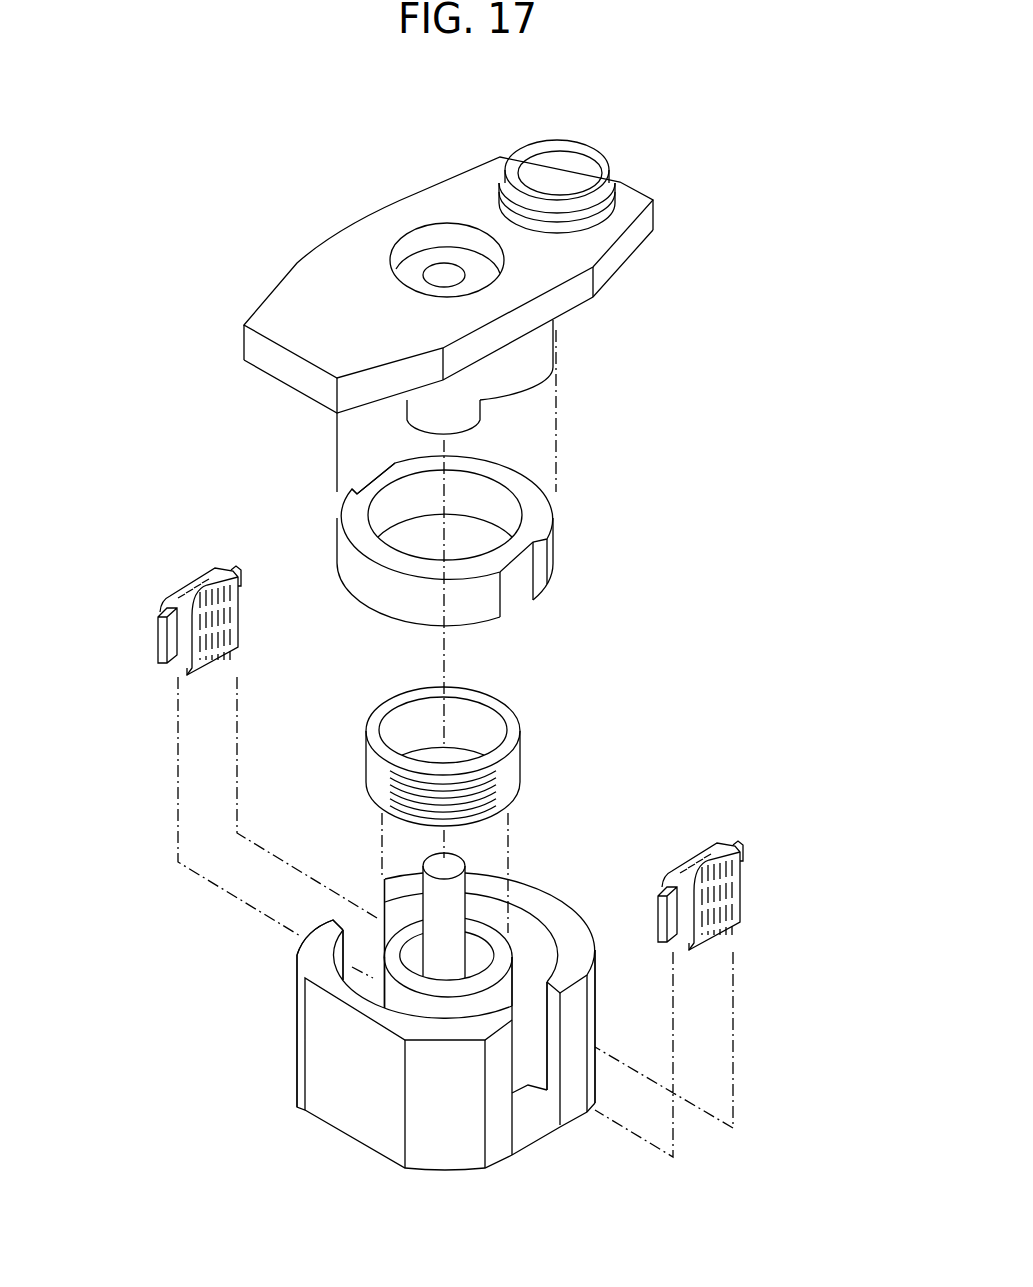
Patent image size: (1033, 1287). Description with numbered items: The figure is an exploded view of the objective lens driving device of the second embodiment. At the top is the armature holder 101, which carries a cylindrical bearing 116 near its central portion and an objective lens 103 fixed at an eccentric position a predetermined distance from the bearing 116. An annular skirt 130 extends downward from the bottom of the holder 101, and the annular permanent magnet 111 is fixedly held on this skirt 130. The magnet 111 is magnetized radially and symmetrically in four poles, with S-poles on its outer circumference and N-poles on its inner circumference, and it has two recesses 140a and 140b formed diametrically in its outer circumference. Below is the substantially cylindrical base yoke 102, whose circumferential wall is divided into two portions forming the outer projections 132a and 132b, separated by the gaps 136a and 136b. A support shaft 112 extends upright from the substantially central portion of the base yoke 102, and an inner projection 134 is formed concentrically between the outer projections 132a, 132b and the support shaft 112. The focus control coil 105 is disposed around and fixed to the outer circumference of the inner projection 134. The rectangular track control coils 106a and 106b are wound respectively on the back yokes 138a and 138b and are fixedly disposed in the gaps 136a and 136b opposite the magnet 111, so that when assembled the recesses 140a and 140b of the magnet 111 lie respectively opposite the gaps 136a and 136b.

The armature holder 101 is at (627, 252).
The base yoke 102 is at (333, 1130).
The objective lens 103 is at (600, 166).
The focus control coil 105 is at (507, 773).
The track control coil 106a is at (200, 582).
The track control coil 106b is at (698, 865).
The annular permanent magnet 111 is at (538, 515).
The support shaft 112 is at (455, 865).
The cylindrical bearing 116 is at (460, 422).
The annular skirt 130 is at (532, 350).
The outer projection 132a is at (380, 1013).
The outer projection 132b is at (573, 937).
The inner projection 134 is at (490, 935).
The gap 136a is at (380, 908).
The gap 136b is at (557, 1067).
The back yoke 138a is at (160, 643).
The back yoke 138b is at (738, 855).
The recess 140a is at (368, 486).
The recess 140b is at (540, 567).